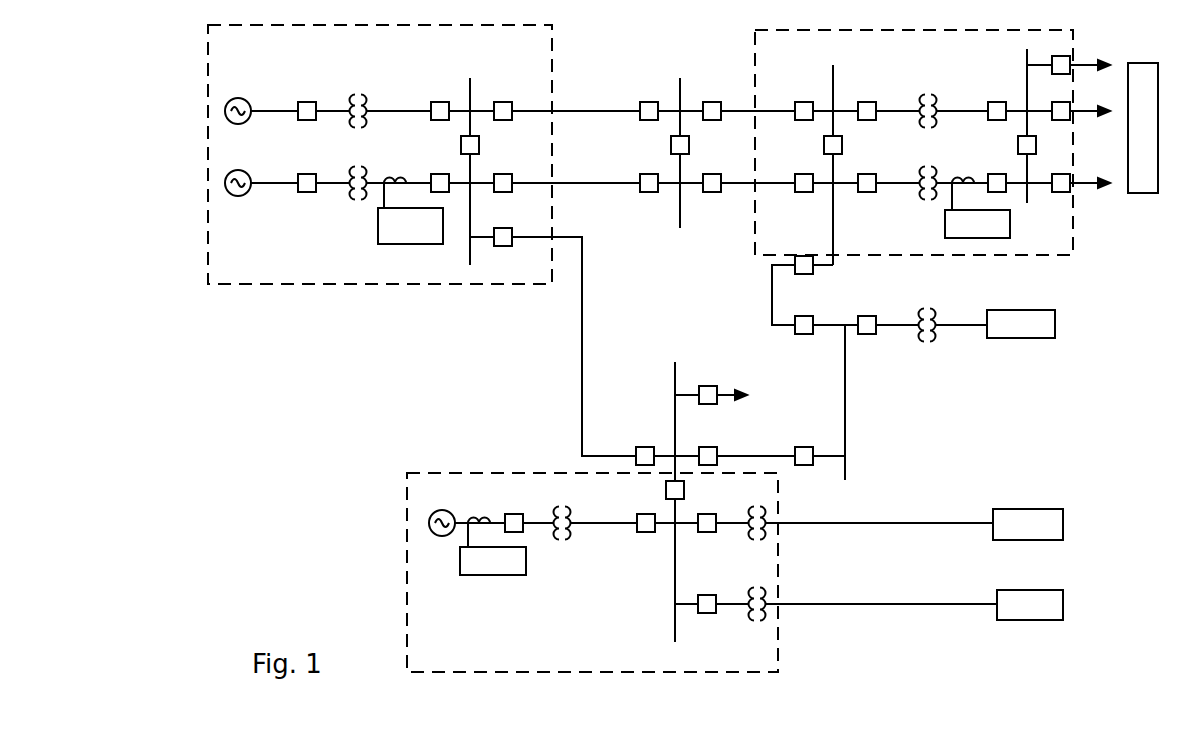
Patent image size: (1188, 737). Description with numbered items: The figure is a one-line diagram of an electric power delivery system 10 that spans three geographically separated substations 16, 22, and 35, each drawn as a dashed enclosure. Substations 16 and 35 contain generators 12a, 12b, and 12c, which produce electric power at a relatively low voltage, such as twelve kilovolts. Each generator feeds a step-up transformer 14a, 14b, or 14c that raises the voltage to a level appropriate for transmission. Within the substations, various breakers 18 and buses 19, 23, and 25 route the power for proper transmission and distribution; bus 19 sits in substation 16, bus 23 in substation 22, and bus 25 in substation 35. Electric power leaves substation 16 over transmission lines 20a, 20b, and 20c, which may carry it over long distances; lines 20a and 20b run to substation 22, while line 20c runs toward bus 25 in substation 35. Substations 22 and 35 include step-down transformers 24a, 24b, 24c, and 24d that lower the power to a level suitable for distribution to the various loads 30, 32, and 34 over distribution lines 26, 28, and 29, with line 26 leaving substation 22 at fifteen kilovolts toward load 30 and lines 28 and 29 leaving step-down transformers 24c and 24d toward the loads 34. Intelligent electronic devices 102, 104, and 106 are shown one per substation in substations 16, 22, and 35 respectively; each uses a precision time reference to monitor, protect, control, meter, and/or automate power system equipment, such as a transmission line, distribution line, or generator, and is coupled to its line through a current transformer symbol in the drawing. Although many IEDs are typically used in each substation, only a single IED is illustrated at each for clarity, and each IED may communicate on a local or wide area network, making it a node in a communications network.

The electric power delivery system 10 is at (713, 38).
The generator 12a is at (243, 124).
The generator 12b is at (243, 196).
The generator 12c is at (450, 537).
The step-up transformer 14a is at (362, 96).
The step-up transformer 14b is at (362, 168).
The step-up transformer 14c is at (560, 507).
The substation 16 is at (553, 62).
The breaker 18 is at (503, 121).
The bus 19 is at (469, 86).
The transmission line 20a is at (605, 109).
The transmission line 20b is at (590, 181).
The transmission line 20c is at (605, 455).
The substation 22 is at (970, 28).
The bus 23 is at (833, 85).
The step-down transformer 24a is at (933, 96).
The step-down transformer 24b is at (933, 168).
The step-down transformer 24c is at (755, 507).
The step-down transformer 24d is at (757, 622).
The bus 25 is at (675, 380).
The distribution line 26 is at (1075, 67).
The distribution line 28 is at (895, 525).
The distribution line 29 is at (905, 605).
The load 30 is at (1128, 193).
The load 32 is at (1057, 325).
The load 34 is at (992, 568).
The substation 35 is at (478, 473).
The intelligent electronic device 102 is at (378, 233).
The intelligent electronic device 104 is at (1010, 212).
The intelligent electronic device 106 is at (526, 550).